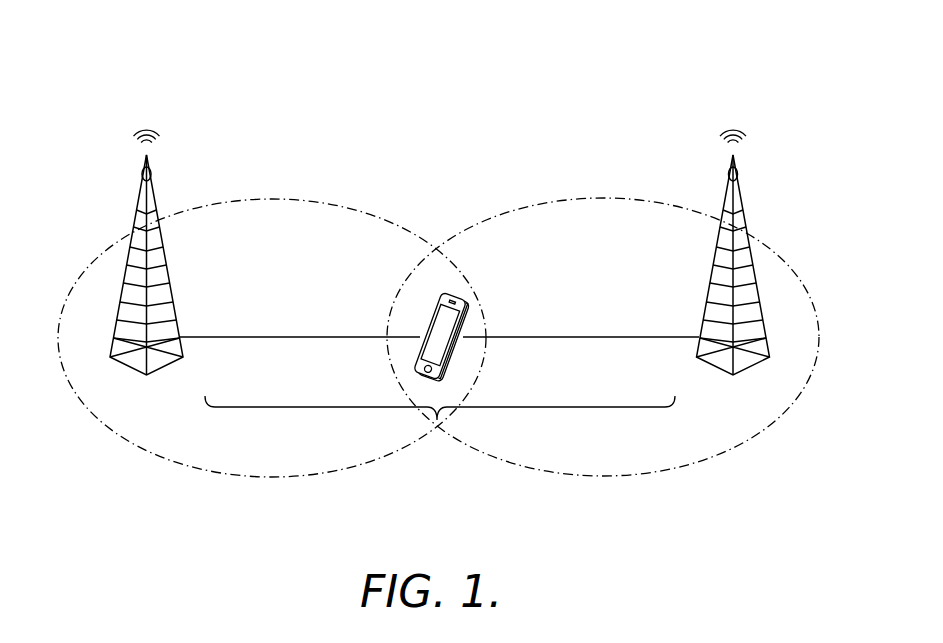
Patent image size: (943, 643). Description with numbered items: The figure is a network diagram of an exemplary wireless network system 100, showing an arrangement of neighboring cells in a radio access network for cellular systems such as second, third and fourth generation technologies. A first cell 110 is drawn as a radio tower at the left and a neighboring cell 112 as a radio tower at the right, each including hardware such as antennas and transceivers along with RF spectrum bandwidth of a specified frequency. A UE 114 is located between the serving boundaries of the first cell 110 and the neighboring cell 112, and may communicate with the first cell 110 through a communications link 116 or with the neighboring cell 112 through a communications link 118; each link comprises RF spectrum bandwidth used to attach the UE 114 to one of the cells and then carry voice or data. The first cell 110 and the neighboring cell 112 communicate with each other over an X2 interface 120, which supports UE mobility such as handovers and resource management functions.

The wireless network system 100 is at (330, 43).
The first cell 110 is at (137, 206).
The neighboring cell 112 is at (741, 200).
The UE 114 is at (466, 304).
The communications link 116 is at (284, 199).
The communications link 118 is at (613, 199).
The X2 interface 120 is at (437, 422).